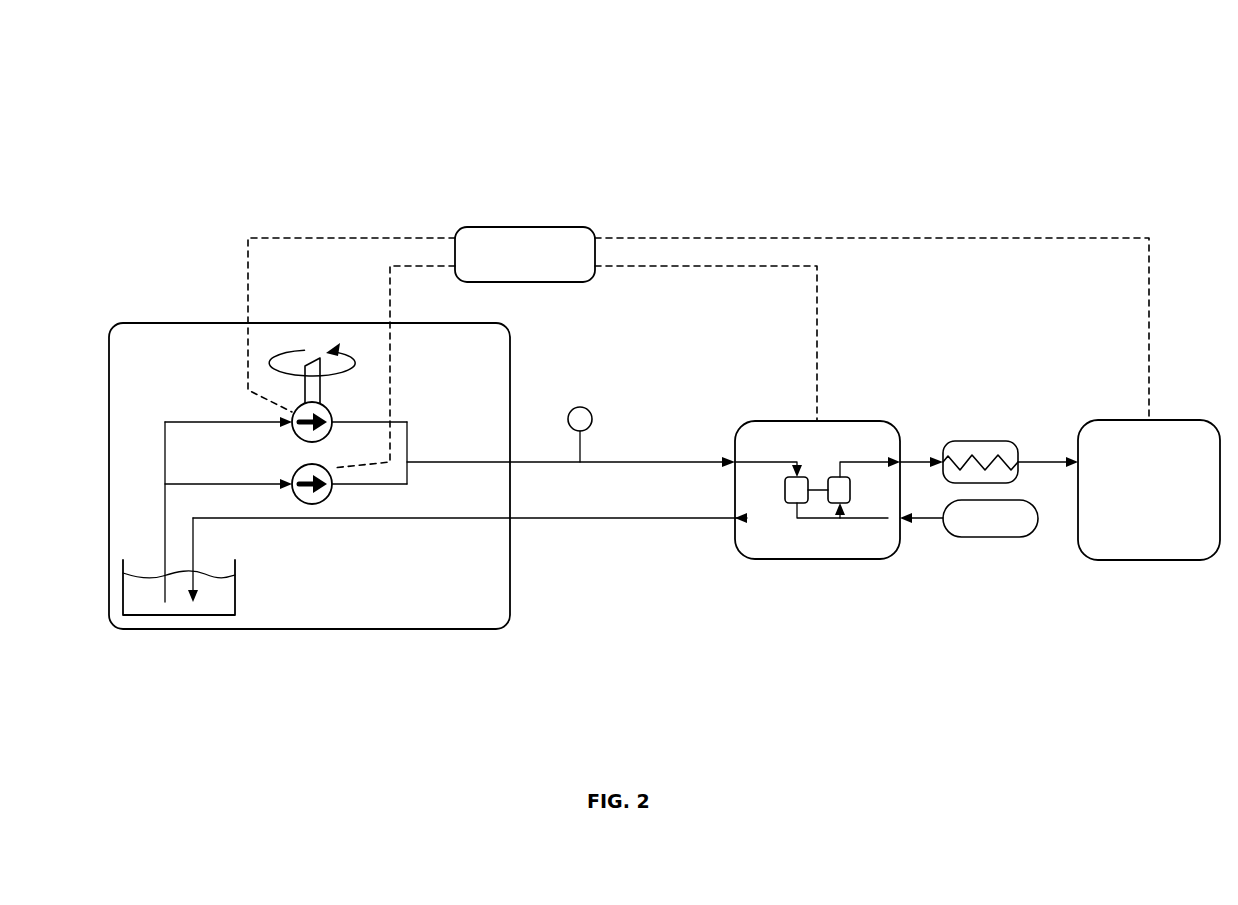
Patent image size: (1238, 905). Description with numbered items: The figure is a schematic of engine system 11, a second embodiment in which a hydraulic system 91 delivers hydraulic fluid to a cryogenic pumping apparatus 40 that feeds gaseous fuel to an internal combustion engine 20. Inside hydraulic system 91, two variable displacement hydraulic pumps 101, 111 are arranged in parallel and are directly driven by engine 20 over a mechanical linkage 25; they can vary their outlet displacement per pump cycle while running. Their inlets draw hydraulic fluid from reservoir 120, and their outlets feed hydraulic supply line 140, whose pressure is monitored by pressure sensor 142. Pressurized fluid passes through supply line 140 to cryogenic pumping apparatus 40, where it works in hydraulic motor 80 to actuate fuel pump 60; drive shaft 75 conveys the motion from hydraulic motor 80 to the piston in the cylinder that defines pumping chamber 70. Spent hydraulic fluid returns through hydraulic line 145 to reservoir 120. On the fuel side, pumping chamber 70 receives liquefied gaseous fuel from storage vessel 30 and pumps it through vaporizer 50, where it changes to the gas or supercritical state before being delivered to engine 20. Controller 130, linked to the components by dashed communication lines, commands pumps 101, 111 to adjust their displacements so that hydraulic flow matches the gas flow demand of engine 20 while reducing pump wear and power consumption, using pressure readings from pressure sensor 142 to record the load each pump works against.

The engine system 11 is at (1016, 170).
The controller 130 is at (525, 227).
The hydraulic system 91 is at (160, 323).
The mechanical linkage 25 is at (316, 356).
The variable displacement hydraulic pump 101 is at (332, 410).
The variable displacement hydraulic pump 111 is at (292, 476).
The reservoir 120 is at (235, 589).
The hydraulic supply line 140 is at (664, 462).
The pressure sensor 142 is at (569, 412).
The hydraulic line 145 is at (604, 522).
The cryogenic pumping apparatus 40 is at (858, 421).
The fuel pump 60 is at (818, 540).
The hydraulic motor 80 is at (785, 490).
The drive shaft 75 is at (818, 489).
The pumping chamber 70 is at (851, 490).
The vaporizer 50 is at (981, 441).
The storage vessel 30 is at (995, 537).
The internal combustion engine 20 is at (1190, 420).